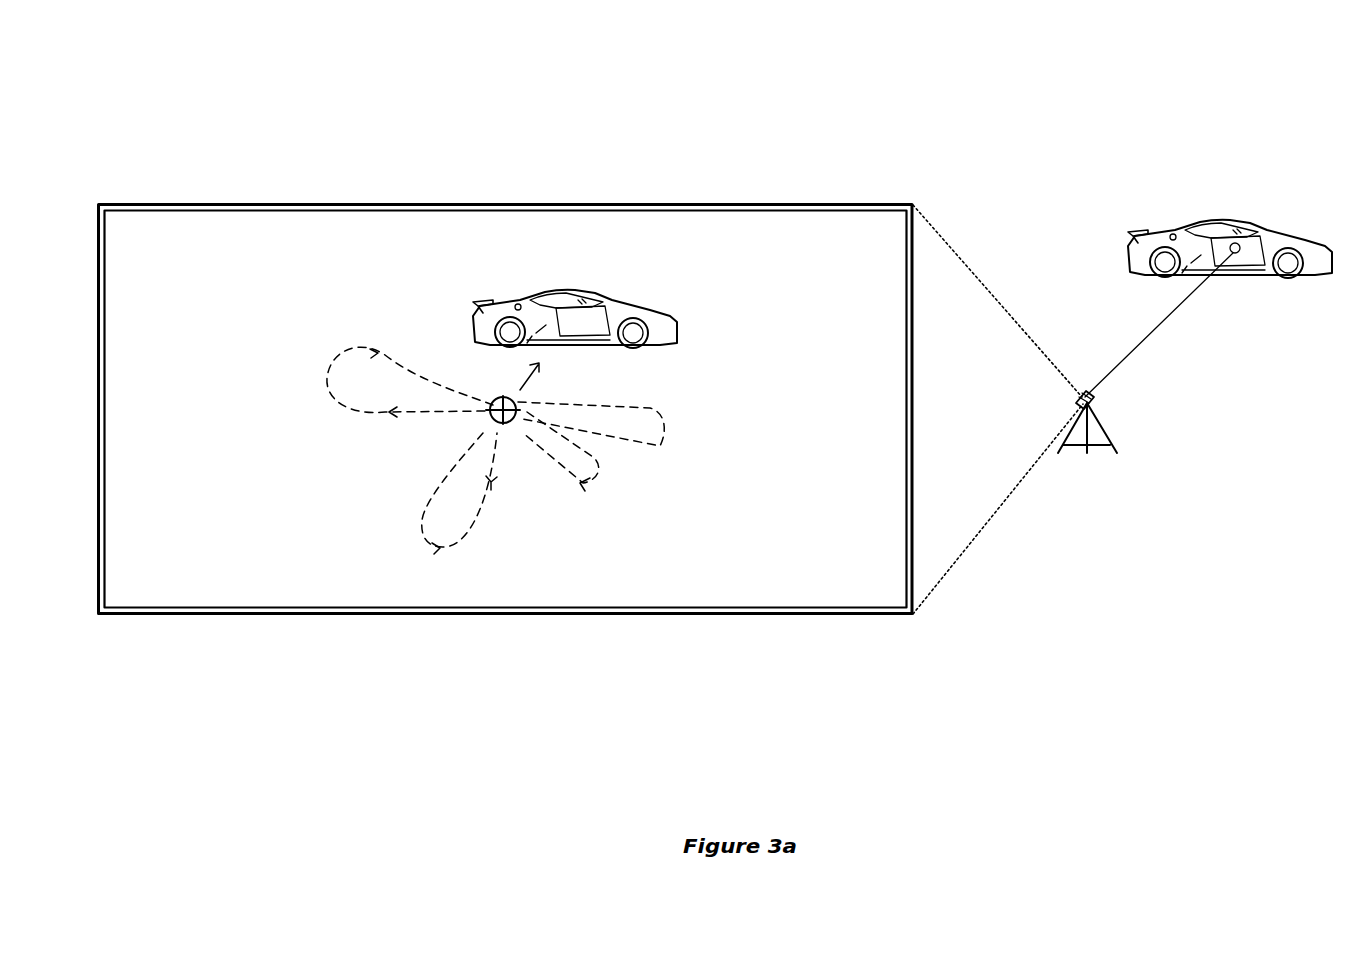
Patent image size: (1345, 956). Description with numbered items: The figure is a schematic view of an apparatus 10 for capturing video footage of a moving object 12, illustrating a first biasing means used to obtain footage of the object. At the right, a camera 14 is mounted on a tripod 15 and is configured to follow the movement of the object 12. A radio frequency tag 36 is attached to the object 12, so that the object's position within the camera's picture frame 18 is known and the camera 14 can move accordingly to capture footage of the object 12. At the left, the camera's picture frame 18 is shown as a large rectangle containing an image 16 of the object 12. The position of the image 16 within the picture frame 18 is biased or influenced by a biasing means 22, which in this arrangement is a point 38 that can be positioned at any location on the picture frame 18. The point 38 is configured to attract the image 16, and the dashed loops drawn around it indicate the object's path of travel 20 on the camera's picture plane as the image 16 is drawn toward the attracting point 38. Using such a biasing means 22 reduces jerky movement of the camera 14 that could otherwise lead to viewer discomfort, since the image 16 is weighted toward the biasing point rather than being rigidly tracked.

The apparatus 10 is at (941, 108).
The moving object 12 is at (1162, 232).
The camera 14 is at (1094, 400).
The tripod 15 is at (1113, 442).
The image 16 is at (569, 298).
The picture frame 18 is at (463, 202).
The path of travel 20 is at (334, 362).
The biasing means 22 is at (506, 440).
The radio frequency tag 36 is at (1240, 254).
The point 38 is at (489, 418).